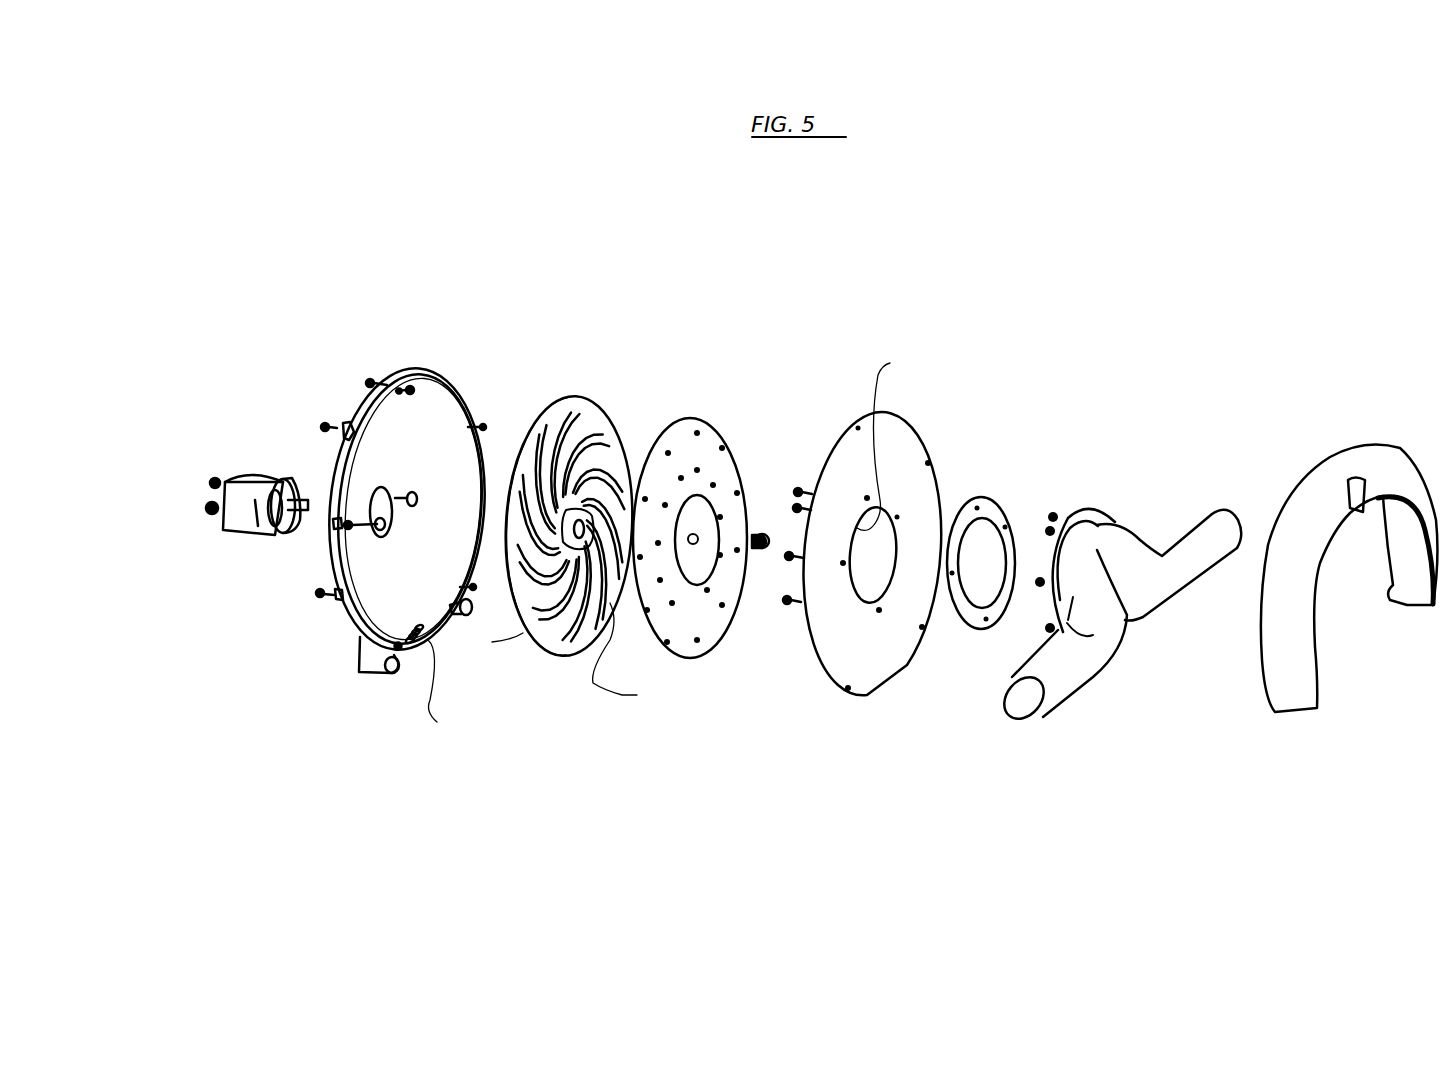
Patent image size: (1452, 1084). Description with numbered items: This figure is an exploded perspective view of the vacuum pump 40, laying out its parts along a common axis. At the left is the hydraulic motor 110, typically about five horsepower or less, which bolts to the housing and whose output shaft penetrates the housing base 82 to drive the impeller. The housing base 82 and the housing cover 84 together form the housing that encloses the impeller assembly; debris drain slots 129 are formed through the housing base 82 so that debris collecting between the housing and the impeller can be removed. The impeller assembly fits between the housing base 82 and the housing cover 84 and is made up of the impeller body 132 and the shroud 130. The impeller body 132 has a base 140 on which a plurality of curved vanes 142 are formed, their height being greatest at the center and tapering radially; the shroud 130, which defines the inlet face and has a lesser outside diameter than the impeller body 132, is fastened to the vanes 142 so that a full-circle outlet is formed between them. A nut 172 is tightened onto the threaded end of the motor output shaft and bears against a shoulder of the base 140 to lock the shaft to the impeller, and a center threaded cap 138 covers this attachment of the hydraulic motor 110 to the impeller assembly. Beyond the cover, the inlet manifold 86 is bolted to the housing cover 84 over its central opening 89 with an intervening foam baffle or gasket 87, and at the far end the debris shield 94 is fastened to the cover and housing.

The vacuum pump 40 is at (1313, 822).
The housing base 82 is at (360, 641).
The housing cover 84 is at (872, 673).
The inlet manifold 86 is at (1070, 677).
The foam baffle or gasket 87 is at (987, 500).
The central opening 89 is at (888, 441).
The debris shield 94 is at (1298, 637).
The hydraulic motor 110 is at (235, 522).
The debris drain slots 129 is at (455, 686).
The shroud 130 is at (690, 660).
The impeller body 132 is at (545, 660).
The center threaded cap 138 is at (762, 530).
The base 140 is at (490, 643).
The curved vanes 142 is at (636, 655).
The nut 172 is at (693, 537).